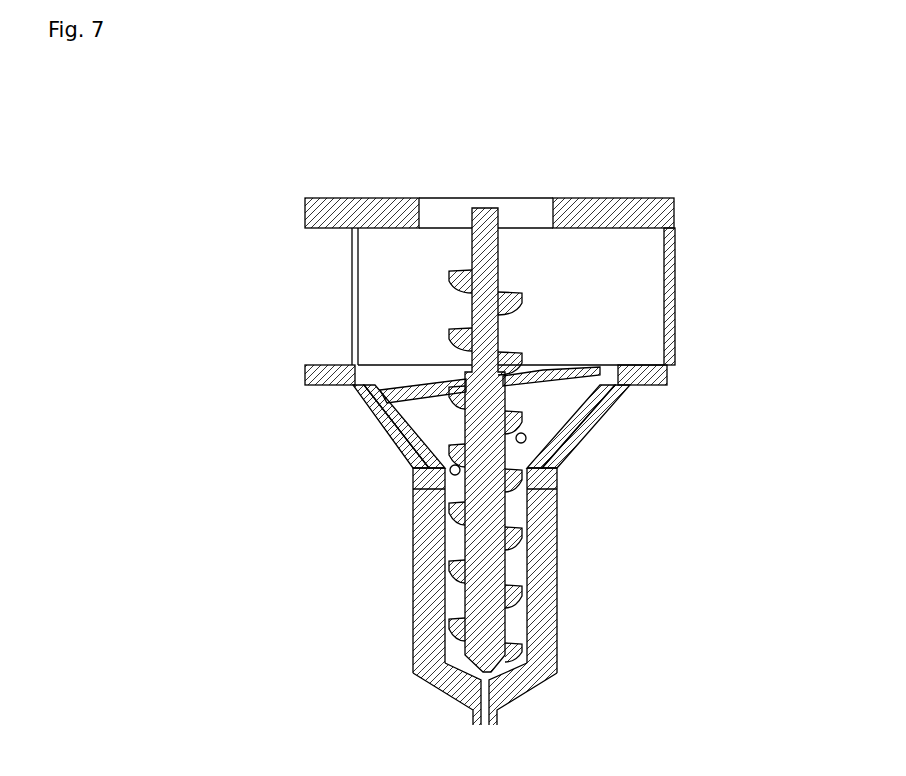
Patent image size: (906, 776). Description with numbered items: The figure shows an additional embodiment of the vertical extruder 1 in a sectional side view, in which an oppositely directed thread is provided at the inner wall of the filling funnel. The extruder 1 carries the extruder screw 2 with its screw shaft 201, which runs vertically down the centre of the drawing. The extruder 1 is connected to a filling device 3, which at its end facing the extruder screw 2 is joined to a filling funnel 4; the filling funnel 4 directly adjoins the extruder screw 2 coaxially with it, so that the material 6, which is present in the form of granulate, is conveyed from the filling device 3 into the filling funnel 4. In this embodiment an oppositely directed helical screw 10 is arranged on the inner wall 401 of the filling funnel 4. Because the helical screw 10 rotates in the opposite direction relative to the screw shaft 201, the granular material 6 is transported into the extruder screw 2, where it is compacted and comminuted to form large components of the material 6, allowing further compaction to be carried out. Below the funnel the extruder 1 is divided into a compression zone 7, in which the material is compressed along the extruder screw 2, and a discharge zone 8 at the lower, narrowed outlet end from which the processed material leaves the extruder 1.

The extruder 1 is at (700, 332).
The extruder screw 2 is at (492, 180).
The screw shaft 201 is at (490, 318).
The filling device 3 is at (352, 330).
The oppositely directed helical screw 10 is at (397, 388).
The filling funnel 4 is at (420, 427).
The inner wall of the filling funnel 401 is at (395, 420).
The material which is present as granulate 6 is at (461, 470).
The compression zone 7 is at (612, 494).
The discharge zone 8 is at (612, 684).